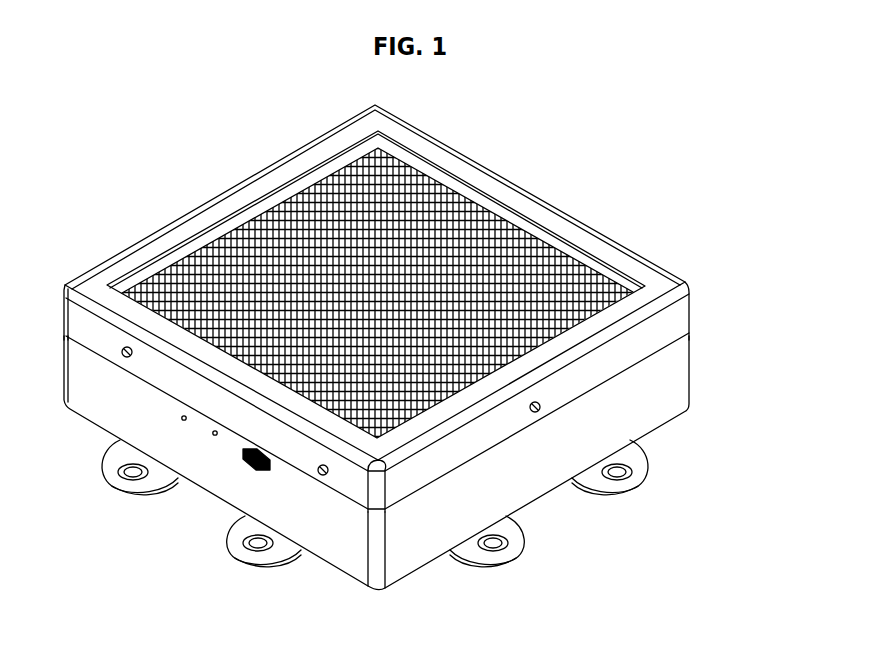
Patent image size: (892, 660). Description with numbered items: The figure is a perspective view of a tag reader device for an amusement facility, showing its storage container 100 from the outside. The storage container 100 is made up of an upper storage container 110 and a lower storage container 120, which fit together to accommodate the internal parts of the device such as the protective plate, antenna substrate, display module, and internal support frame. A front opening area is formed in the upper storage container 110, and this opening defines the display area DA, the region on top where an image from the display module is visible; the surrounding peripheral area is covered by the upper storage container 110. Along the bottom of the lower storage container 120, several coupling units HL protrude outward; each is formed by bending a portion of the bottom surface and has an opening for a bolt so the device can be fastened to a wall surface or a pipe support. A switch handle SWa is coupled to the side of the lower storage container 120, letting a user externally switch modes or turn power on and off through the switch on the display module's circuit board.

The storage container 100 is at (436, 347).
The upper storage container 110 is at (689, 314).
The lower storage container 120 is at (689, 364).
The display area DA is at (513, 215).
The coupling unit HL is at (118, 490).
The switch handle SWa is at (243, 458).